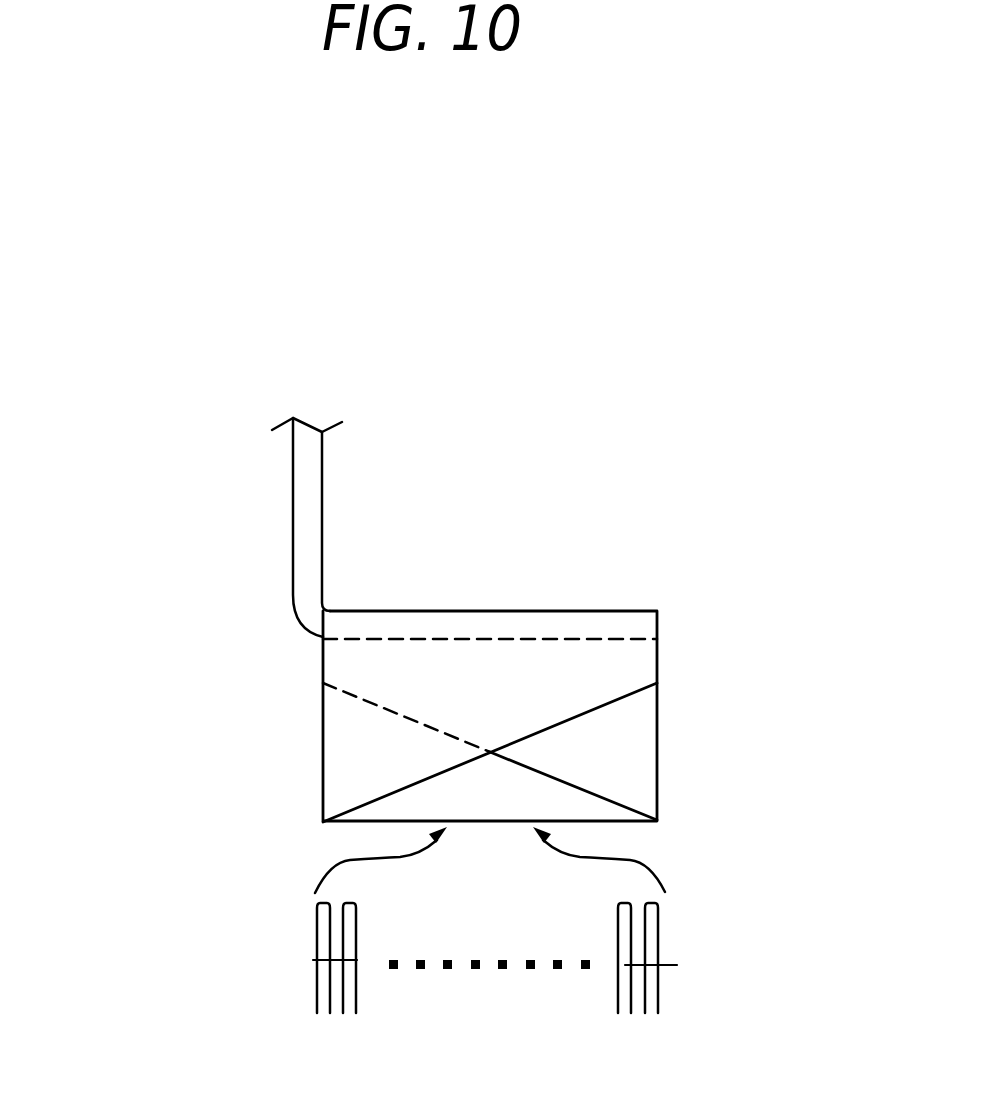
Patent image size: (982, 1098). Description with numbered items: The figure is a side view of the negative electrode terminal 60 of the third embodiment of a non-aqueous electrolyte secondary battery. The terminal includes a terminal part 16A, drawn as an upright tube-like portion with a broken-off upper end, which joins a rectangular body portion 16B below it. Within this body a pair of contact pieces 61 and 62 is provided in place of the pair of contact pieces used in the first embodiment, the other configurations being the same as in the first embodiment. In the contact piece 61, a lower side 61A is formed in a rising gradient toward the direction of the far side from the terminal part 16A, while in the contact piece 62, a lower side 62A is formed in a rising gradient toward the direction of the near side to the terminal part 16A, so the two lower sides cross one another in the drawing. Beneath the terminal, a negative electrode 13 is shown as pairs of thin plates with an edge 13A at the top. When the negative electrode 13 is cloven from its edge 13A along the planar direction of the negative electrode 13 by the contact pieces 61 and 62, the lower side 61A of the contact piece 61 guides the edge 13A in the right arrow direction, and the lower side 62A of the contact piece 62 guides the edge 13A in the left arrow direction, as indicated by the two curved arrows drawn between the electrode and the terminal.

The negative electrode terminal 60 is at (421, 603).
The terminal part 16A is at (300, 495).
The light guide body portion 16B is at (535, 610).
The contact piece 61 is at (350, 750).
The contact piece 62 is at (620, 748).
The lower side 61A is at (422, 782).
The lower side 62A is at (563, 788).
The negative electrode 13 is at (658, 987).
The edge 13A is at (317, 918).